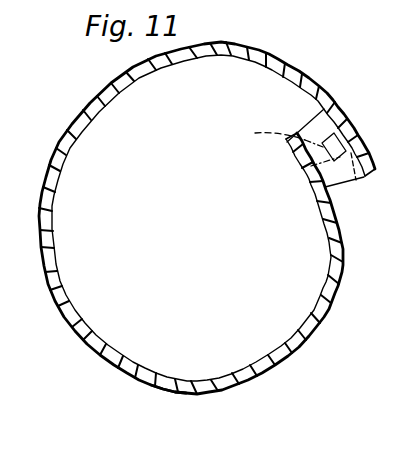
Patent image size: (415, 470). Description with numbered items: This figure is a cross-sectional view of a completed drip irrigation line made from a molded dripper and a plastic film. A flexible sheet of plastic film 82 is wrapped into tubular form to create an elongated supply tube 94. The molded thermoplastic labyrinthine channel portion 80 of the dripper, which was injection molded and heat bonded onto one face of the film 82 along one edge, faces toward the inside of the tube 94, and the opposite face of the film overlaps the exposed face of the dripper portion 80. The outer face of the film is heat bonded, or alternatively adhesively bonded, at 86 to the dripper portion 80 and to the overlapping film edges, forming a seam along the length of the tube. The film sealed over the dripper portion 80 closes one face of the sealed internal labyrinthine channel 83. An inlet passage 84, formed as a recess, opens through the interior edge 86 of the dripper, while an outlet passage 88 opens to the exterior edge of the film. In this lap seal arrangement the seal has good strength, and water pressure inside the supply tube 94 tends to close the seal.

The molded labyrinthine channel portion 80 is at (323, 116).
The flexible sheet of plastic film 82 is at (77, 333).
The labyrinthine channel 83 is at (345, 146).
The inlet passage 84 is at (275, 138).
The interior edge 86 is at (309, 168).
The outlet passage 88 is at (353, 177).
The supply tube 94 is at (168, 397).